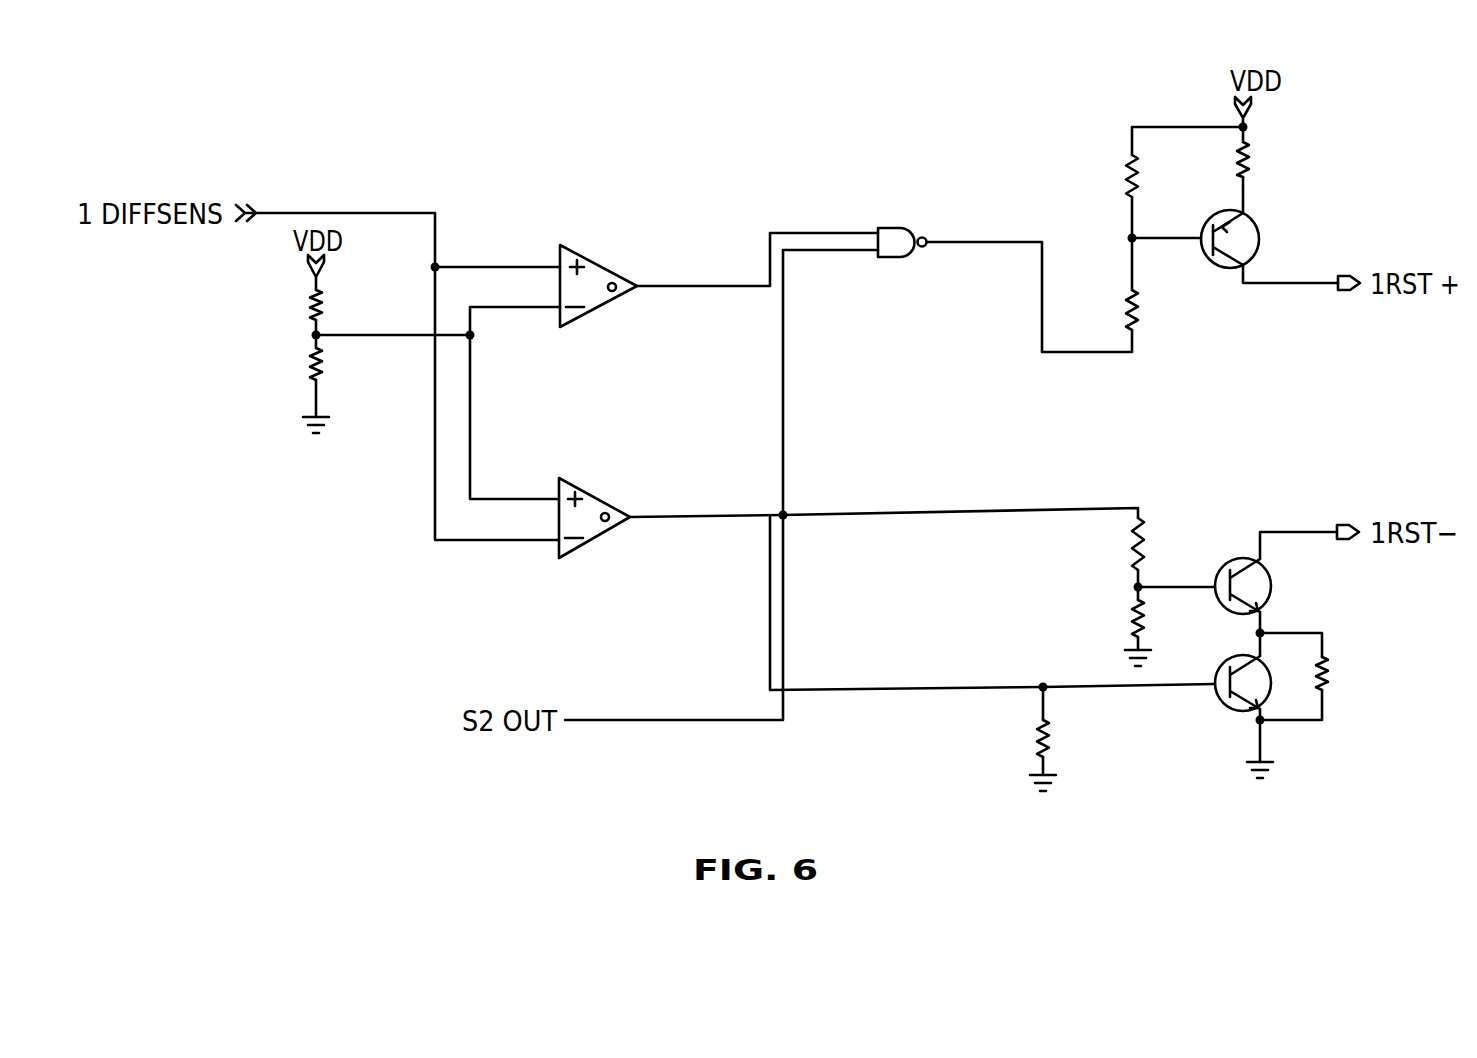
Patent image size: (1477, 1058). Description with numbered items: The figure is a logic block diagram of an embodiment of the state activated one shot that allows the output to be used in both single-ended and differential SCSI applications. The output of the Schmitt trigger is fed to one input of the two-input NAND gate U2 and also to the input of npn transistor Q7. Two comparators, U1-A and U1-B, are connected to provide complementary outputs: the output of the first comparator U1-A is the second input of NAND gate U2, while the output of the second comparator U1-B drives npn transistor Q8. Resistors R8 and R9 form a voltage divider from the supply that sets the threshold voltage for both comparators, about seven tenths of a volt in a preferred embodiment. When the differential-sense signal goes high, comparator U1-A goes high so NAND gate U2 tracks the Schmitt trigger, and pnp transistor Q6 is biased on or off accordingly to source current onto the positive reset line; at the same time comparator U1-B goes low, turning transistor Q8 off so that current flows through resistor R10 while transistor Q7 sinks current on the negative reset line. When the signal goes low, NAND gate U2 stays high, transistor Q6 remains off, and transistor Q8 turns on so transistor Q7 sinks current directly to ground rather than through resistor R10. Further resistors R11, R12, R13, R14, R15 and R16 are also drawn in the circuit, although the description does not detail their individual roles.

The resistor R8 is at (289, 307).
The resistor R9 is at (289, 370).
The resistor R10 is at (1358, 679).
The resistor R11 is at (1276, 160).
The resistor R12 is at (1013, 738).
The resistor R13 is at (1107, 619).
The resistor R14 is at (1106, 544).
The resistor R15 is at (1104, 310).
The resistor R16 is at (1102, 176).
The pnp transistor Q6 is at (1259, 239).
The npn transistor Q7 is at (1269, 586).
The npn transistor Q8 is at (1224, 696).
The first comparator U1-A is at (592, 262).
The second comparator U1-B is at (588, 492).
The two input NAND gate U2 is at (902, 269).